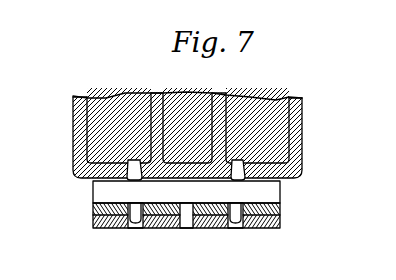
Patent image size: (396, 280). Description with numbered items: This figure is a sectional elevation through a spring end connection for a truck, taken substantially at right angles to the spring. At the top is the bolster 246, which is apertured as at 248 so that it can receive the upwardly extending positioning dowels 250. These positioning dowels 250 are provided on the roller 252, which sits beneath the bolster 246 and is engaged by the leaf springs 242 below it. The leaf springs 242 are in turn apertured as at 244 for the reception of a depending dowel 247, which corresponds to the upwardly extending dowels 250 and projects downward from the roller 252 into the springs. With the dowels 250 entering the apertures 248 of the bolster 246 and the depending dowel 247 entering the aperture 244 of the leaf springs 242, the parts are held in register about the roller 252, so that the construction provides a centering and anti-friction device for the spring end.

The bolster 246 is at (73, 143).
The aperture 248 is at (122, 160).
The upwardly extending positioning dowel 250 is at (160, 152).
The roller 252 is at (272, 193).
The leaf spring 242 is at (281, 222).
The aperture 244 is at (112, 226).
The depending dowel 247 is at (137, 223).